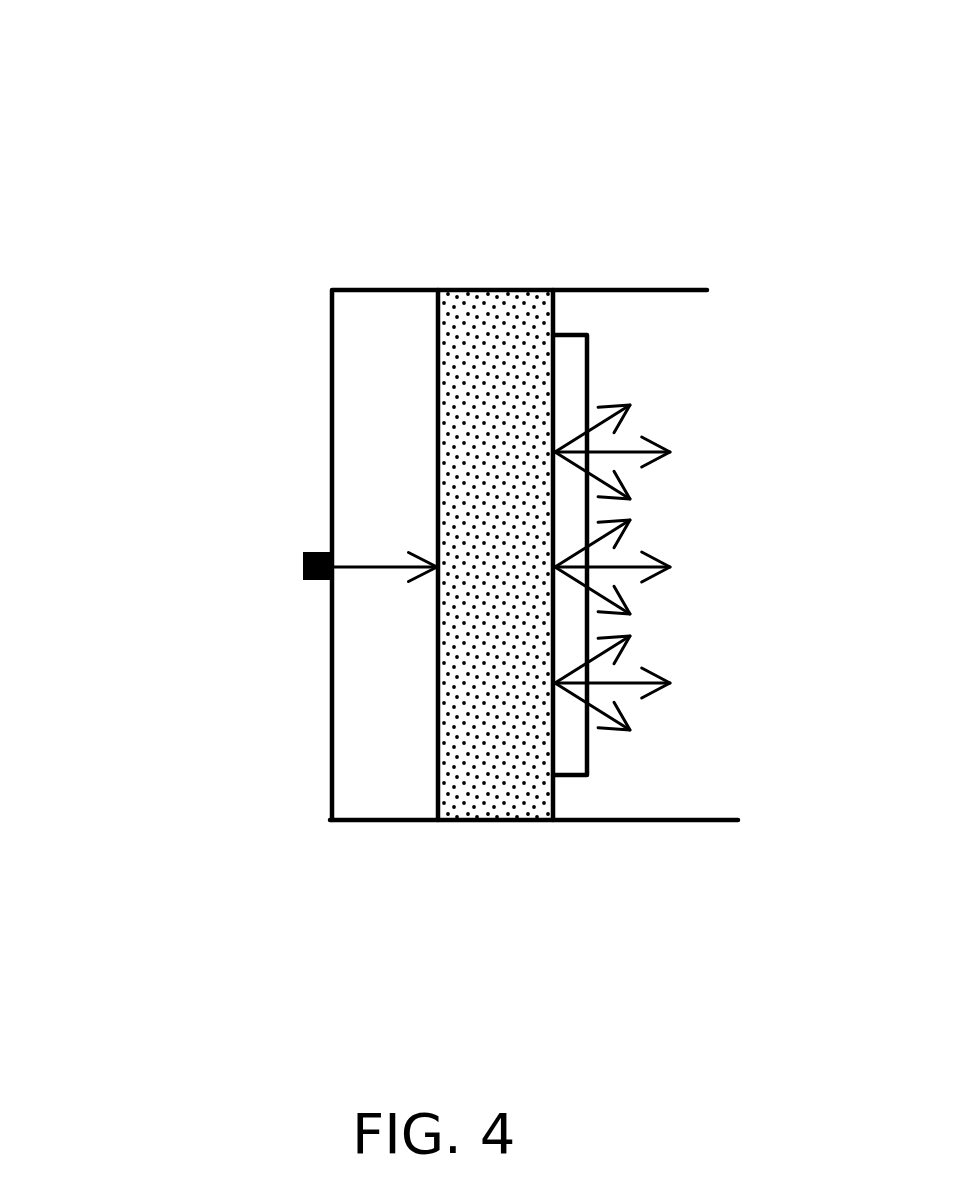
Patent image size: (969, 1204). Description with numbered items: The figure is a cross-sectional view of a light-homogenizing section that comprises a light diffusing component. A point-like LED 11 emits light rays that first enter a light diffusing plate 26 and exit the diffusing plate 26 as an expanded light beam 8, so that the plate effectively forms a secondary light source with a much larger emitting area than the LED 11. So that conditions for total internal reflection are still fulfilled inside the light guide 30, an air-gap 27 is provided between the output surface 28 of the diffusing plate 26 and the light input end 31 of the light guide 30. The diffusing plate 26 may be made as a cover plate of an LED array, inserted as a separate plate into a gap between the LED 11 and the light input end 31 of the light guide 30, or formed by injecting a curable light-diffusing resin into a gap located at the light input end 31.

The light diffusing plate 26 is at (449, 290).
The air-gap 27 is at (567, 357).
The output surface 28 is at (543, 368).
The LED 11 is at (300, 567).
The expanded light beam 8 is at (626, 448).
The light input end 31 is at (588, 753).
The light guide 30 is at (668, 773).